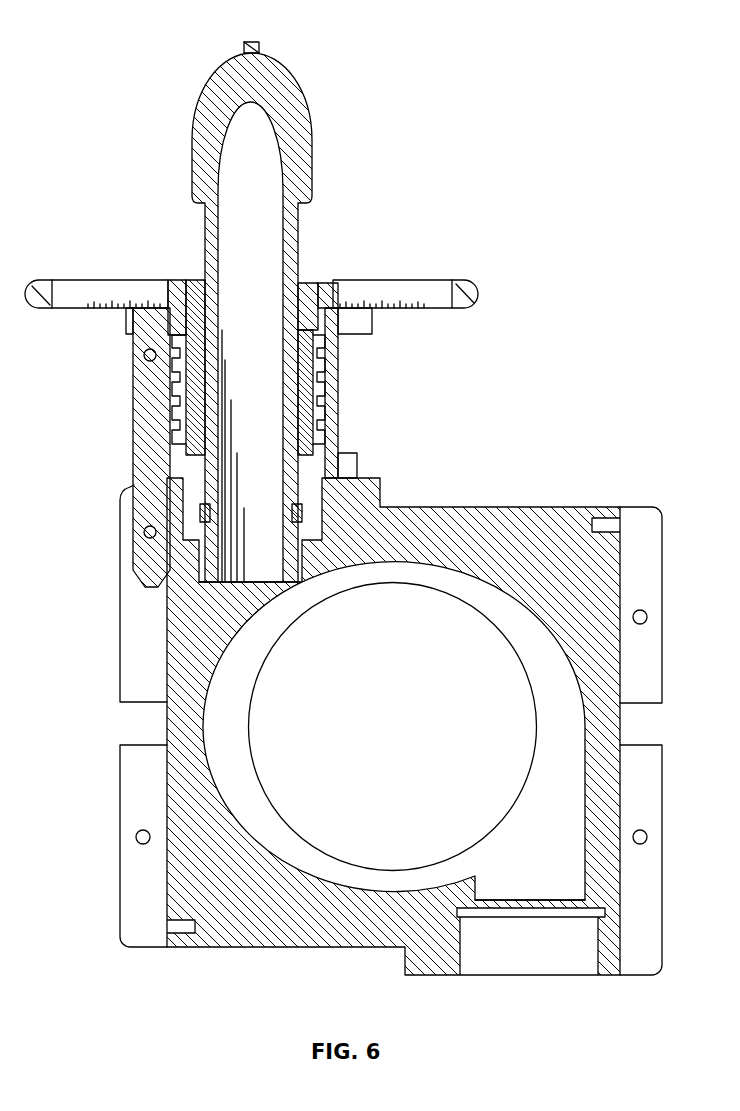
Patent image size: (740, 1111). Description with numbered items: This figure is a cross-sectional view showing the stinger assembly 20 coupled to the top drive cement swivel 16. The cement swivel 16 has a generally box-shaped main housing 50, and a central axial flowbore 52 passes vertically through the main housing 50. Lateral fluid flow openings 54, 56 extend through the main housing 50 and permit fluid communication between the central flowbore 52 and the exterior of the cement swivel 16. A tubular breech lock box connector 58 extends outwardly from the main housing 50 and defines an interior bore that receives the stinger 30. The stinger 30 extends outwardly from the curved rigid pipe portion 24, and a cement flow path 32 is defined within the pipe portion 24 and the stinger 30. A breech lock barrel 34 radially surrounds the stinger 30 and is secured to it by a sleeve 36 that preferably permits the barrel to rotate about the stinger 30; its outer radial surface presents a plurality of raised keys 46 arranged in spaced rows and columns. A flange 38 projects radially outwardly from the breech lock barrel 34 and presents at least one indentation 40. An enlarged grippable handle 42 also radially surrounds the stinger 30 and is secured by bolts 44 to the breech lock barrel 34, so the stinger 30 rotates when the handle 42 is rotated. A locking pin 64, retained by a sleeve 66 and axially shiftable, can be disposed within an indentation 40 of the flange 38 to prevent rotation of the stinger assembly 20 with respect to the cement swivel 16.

The top drive cement swivel 16 is at (568, 492).
The stinger assembly 20 is at (505, 43).
The curved rigid pipe portion 24 is at (192, 152).
The stinger 30 is at (205, 506).
The cement flow path 32 is at (218, 271).
The breech lock barrel 34 is at (148, 349).
The sleeve 36 is at (323, 393).
The flange 38 is at (338, 336).
The indentation 40 is at (127, 318).
The grippable handle 42 is at (456, 281).
The bolts 44 is at (170, 280).
The raised keys 46 is at (178, 432).
The main housing 50 is at (409, 517).
The central axial flowbore 52 is at (495, 738).
The lateral fluid flow opening 54 is at (199, 611).
The lateral fluid flow opening 56 is at (583, 884).
The tubular breech lock box connector 58 is at (338, 402).
The locking pin 64 is at (141, 483).
The sleeve 66 is at (121, 556).